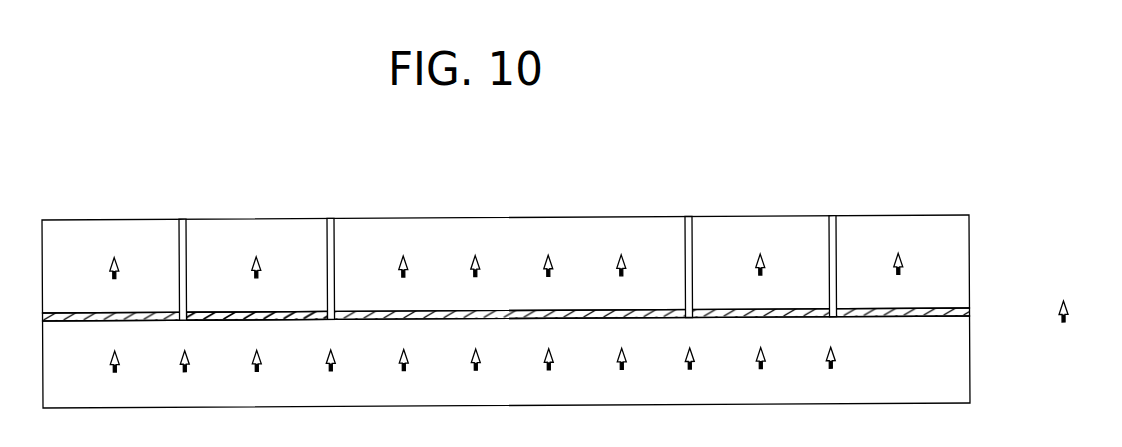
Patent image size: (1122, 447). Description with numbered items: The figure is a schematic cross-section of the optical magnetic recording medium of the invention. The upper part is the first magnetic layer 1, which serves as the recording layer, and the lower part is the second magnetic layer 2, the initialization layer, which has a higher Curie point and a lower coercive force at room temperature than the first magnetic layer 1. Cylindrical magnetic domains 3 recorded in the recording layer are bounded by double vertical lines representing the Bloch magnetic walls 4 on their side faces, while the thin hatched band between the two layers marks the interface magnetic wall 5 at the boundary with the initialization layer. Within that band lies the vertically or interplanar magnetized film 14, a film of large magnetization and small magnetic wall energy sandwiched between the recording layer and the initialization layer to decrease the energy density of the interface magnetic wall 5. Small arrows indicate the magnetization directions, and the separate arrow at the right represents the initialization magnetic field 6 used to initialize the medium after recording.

The first magnetic layer 1 is at (970, 278).
The second magnetic layer 2 is at (970, 372).
The cylindrical magnetic domain 3 is at (256, 253).
The Bloch magnetic wall 4 is at (179, 243).
The interface magnetic wall 5 is at (80, 321).
The initialization magnetic field 6 is at (1080, 312).
The interplanar magnetized film 14 is at (222, 322).